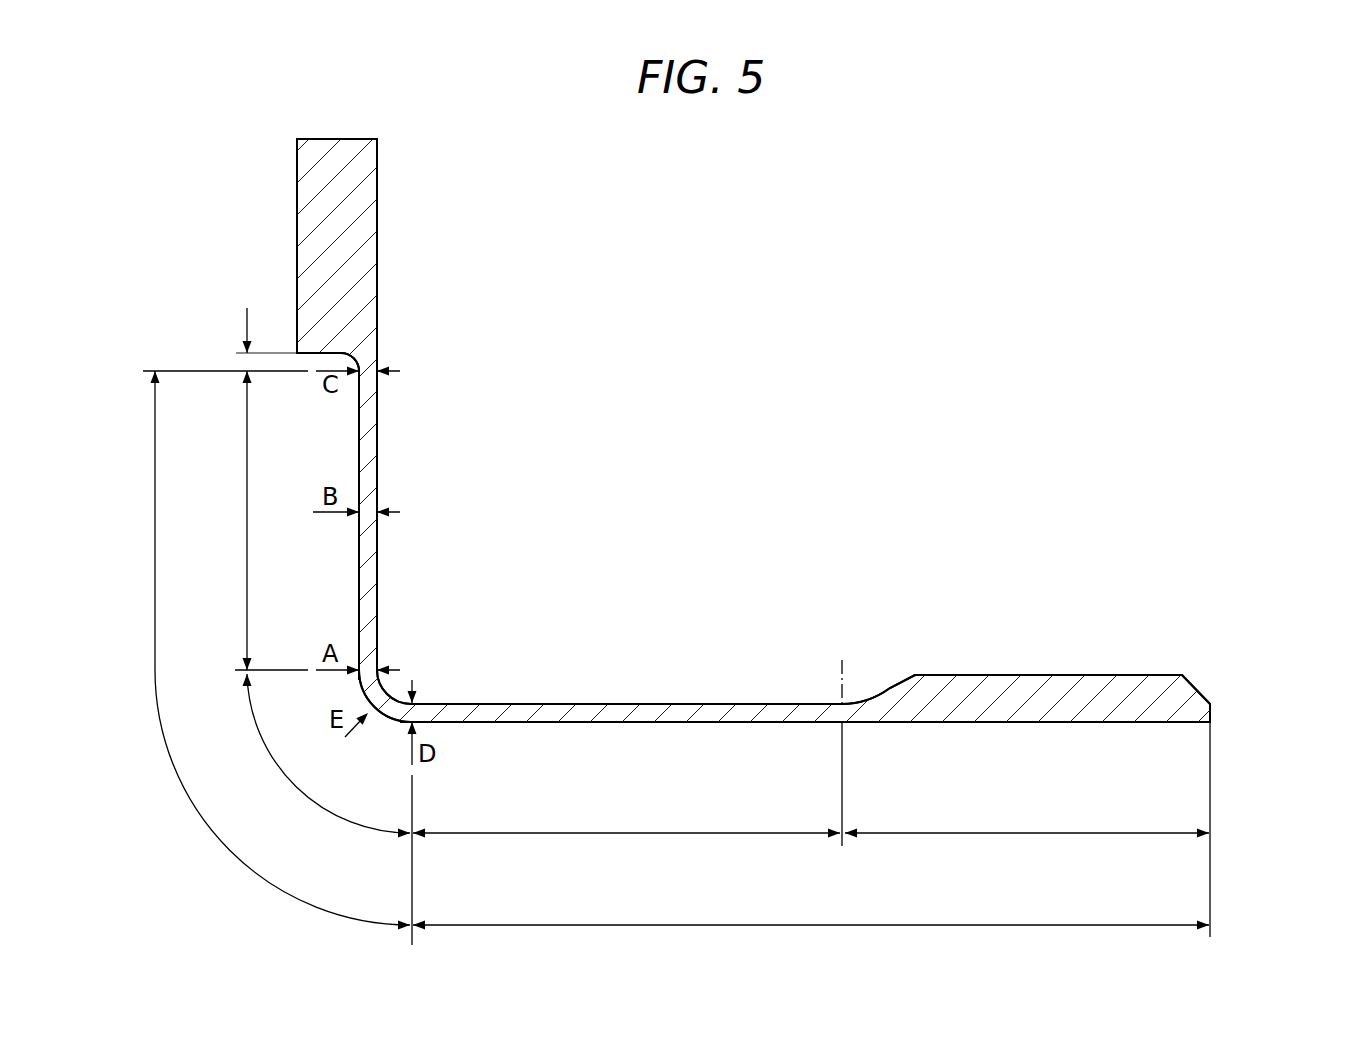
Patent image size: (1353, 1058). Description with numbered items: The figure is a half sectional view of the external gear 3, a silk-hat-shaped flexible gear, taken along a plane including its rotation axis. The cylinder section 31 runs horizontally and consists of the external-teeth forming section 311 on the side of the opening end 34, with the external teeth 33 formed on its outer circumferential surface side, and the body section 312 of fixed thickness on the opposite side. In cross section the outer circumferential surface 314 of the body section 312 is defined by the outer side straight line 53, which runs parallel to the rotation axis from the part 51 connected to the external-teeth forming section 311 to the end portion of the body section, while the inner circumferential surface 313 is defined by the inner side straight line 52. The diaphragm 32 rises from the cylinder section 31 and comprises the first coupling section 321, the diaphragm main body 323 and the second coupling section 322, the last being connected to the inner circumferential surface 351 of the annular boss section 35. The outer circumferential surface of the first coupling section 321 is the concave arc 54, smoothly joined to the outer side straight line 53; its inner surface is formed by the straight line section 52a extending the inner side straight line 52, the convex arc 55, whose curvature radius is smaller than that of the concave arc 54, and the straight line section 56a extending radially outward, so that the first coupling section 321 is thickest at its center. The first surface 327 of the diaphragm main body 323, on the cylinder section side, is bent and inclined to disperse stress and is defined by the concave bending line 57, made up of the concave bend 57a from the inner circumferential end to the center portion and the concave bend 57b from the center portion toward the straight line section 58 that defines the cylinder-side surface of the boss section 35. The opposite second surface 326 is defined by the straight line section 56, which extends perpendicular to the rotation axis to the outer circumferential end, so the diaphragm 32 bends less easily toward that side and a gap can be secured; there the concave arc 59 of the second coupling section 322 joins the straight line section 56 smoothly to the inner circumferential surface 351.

The external gear 3 is at (882, 272).
The cylinder section 31 is at (811, 910).
The external-teeth forming section 311 is at (1027, 829).
The body section 312 is at (626, 818).
The inner circumferential surface 313 is at (717, 722).
The outer circumferential surface 314 is at (716, 703).
The diaphragm 32 is at (259, 519).
The first coupling section 321 is at (282, 800).
The second coupling section 322 is at (245, 330).
The diaphragm main body 323 is at (223, 520).
The second surface 326 is at (358, 436).
The first surface 327 is at (378, 425).
The external teeth 33 is at (1037, 675).
The opening end 34 is at (1213, 711).
The boss section 35 is at (390, 189).
The inner circumferential surface 351 is at (318, 354).
The part connected to the external-teeth forming section 51 is at (842, 703).
The inner side straight line 52 is at (557, 722).
The straight line section 52a is at (404, 724).
The outer side straight line 53 is at (560, 703).
The concave arc 54 is at (396, 686).
The convex arc 55 is at (382, 725).
The straight line section 56 is at (358, 595).
The straight line section 56a is at (358, 673).
The concave bending line 57 is at (466, 448).
The concave bend 57a is at (378, 561).
The concave bend 57b is at (378, 473).
The straight line section 58 is at (378, 233).
The concave arc 59 is at (344, 355).